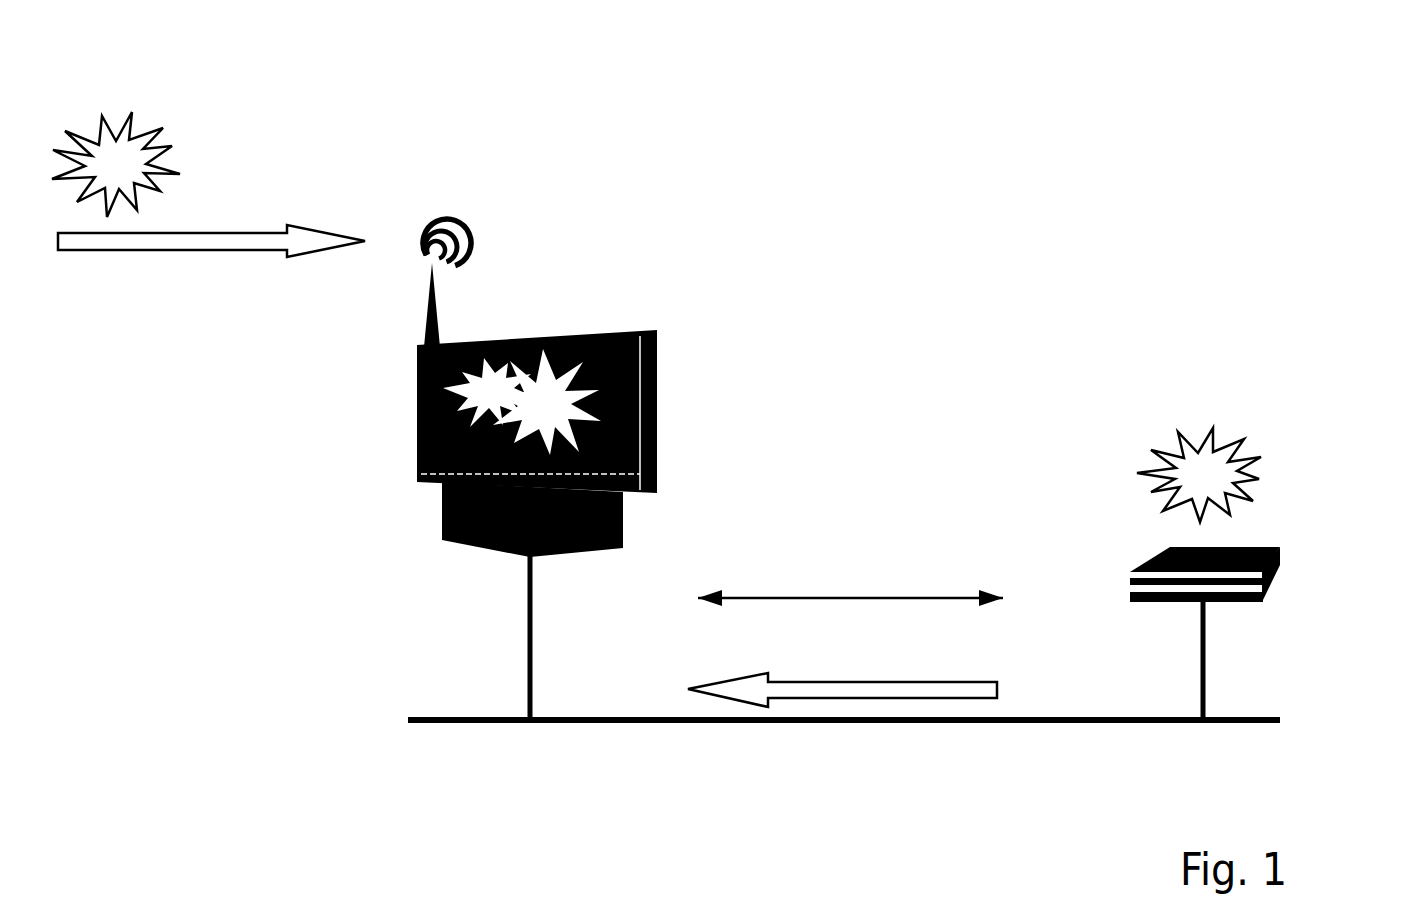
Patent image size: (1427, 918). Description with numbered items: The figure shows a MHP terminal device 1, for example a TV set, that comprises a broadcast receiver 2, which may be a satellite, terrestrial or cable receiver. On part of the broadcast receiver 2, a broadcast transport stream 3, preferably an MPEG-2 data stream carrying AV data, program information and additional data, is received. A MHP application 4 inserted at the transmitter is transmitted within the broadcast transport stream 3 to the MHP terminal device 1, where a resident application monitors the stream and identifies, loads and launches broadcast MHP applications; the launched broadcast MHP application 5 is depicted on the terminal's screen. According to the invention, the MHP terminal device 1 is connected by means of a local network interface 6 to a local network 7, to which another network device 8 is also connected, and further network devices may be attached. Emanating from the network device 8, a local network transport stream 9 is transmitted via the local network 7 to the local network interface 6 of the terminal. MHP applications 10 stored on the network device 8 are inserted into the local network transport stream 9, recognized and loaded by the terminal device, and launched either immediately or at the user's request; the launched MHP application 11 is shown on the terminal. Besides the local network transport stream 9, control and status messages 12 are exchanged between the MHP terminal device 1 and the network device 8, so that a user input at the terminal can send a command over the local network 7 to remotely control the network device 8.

The MHP terminal device 1 is at (638, 327).
The broadcast receiver 2 is at (440, 300).
The broadcast transport stream 3 is at (193, 227).
The MHP application 4 is at (118, 133).
The broadcast MHP application 5 is at (490, 393).
The local network interface 6 is at (515, 628).
The local network 7 is at (607, 733).
The network device 8 is at (1280, 562).
The local network transport stream 9 is at (957, 673).
The MHP applications 10 is at (1257, 465).
The MHP application 11 is at (543, 410).
The control and status messages 12 is at (813, 537).